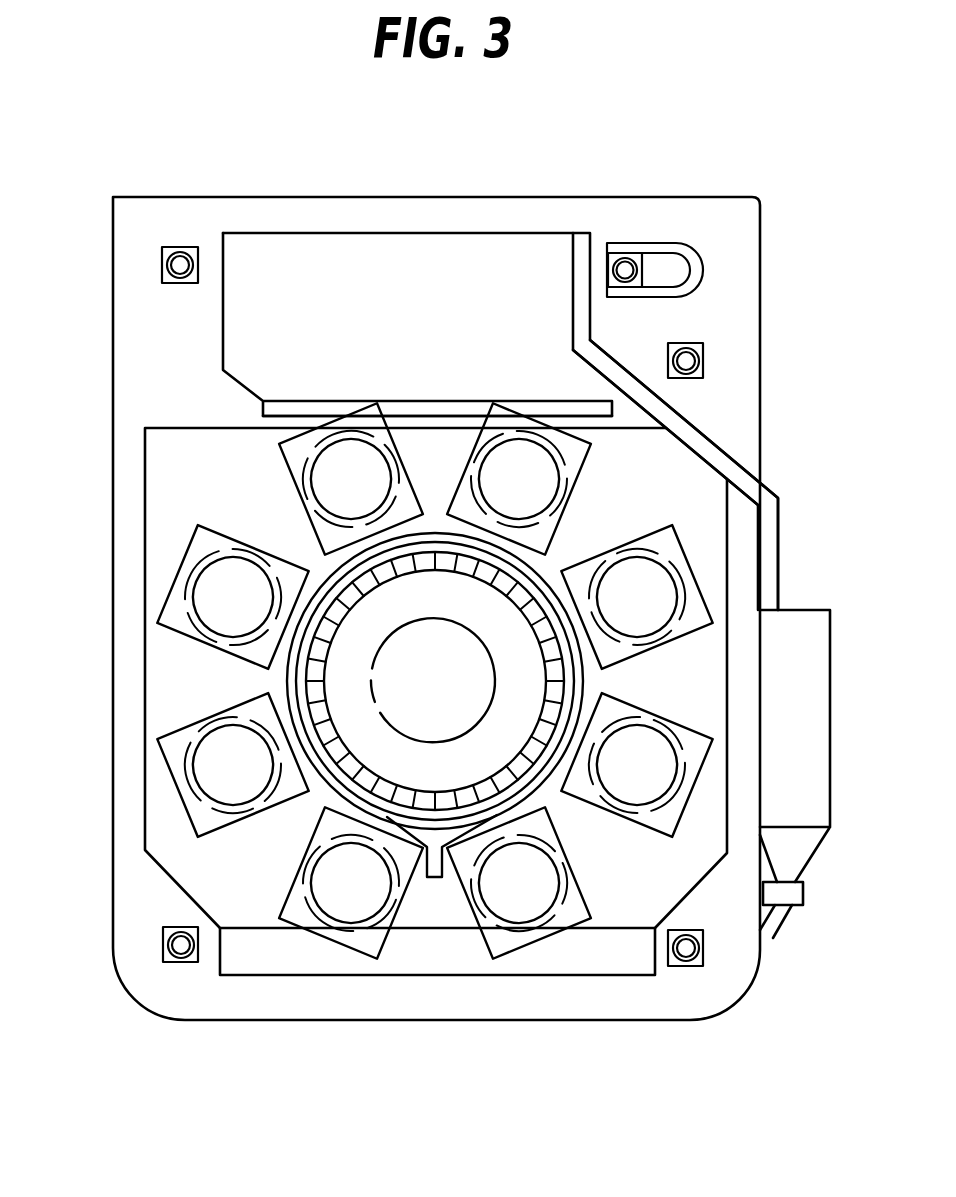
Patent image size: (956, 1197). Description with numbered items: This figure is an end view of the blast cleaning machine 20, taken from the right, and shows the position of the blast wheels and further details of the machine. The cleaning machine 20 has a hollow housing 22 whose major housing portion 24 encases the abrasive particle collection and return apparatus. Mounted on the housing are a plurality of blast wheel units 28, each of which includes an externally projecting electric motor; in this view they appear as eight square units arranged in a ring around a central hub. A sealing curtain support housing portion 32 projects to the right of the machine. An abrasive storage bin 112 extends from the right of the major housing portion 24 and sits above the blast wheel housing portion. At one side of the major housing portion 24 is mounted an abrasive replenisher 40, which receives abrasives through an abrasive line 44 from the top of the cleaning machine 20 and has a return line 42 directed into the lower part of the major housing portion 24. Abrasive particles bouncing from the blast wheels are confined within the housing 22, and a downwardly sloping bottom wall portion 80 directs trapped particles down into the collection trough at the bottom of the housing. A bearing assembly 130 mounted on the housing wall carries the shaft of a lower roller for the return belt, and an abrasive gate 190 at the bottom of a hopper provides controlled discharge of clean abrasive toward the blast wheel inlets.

The cleaning machine 20 is at (83, 542).
The hollow housing 22 is at (790, 478).
The major housing portion 24 is at (750, 282).
The blast wheel units 28 is at (243, 553).
The sealing curtain support housing portion 32 is at (297, 670).
The abrasive replenisher 40 is at (820, 637).
The return line 42 is at (773, 938).
The abrasive line 44 is at (778, 557).
The downwardly sloping bottom wall portion 80 is at (435, 877).
The abrasive storage bin 112 is at (405, 262).
The bearing assembly 130 is at (180, 958).
The abrasive gate 190 is at (263, 407).